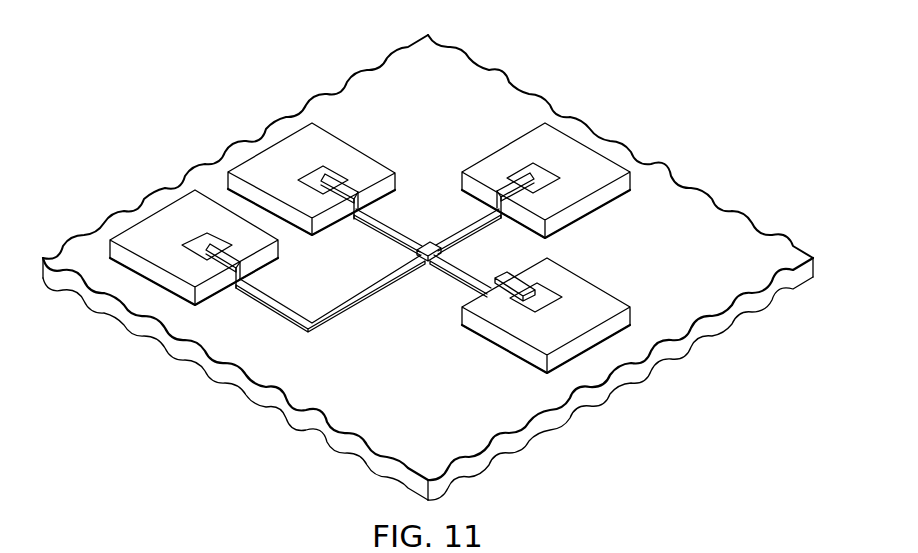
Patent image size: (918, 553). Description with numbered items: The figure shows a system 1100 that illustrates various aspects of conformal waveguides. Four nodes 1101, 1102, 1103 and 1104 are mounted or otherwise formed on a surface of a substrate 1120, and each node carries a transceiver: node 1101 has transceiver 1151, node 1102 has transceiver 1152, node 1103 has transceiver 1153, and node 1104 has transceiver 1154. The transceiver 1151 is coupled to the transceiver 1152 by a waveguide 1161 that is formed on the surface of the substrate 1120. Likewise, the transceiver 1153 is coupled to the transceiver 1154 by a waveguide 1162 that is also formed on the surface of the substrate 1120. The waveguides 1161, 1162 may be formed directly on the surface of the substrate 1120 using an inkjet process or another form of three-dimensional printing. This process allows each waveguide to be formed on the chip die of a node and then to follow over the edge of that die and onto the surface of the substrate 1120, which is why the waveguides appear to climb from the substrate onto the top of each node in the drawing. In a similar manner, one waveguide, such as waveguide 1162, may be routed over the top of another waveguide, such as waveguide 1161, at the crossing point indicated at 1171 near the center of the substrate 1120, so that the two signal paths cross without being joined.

The system 1100 is at (206, 64).
The substrate 1120 is at (470, 75).
The node 1101 is at (278, 152).
The node 1102 is at (503, 342).
The node 1103 is at (580, 152).
The node 1104 is at (152, 272).
The transceiver 1151 is at (325, 168).
The transceiver 1152 is at (540, 292).
The transceiver 1153 is at (533, 167).
The transceiver 1154 is at (198, 240).
The waveguide 1161 is at (392, 238).
The waveguide 1162 is at (280, 313).
The waveguide crossover 1171 is at (430, 243).